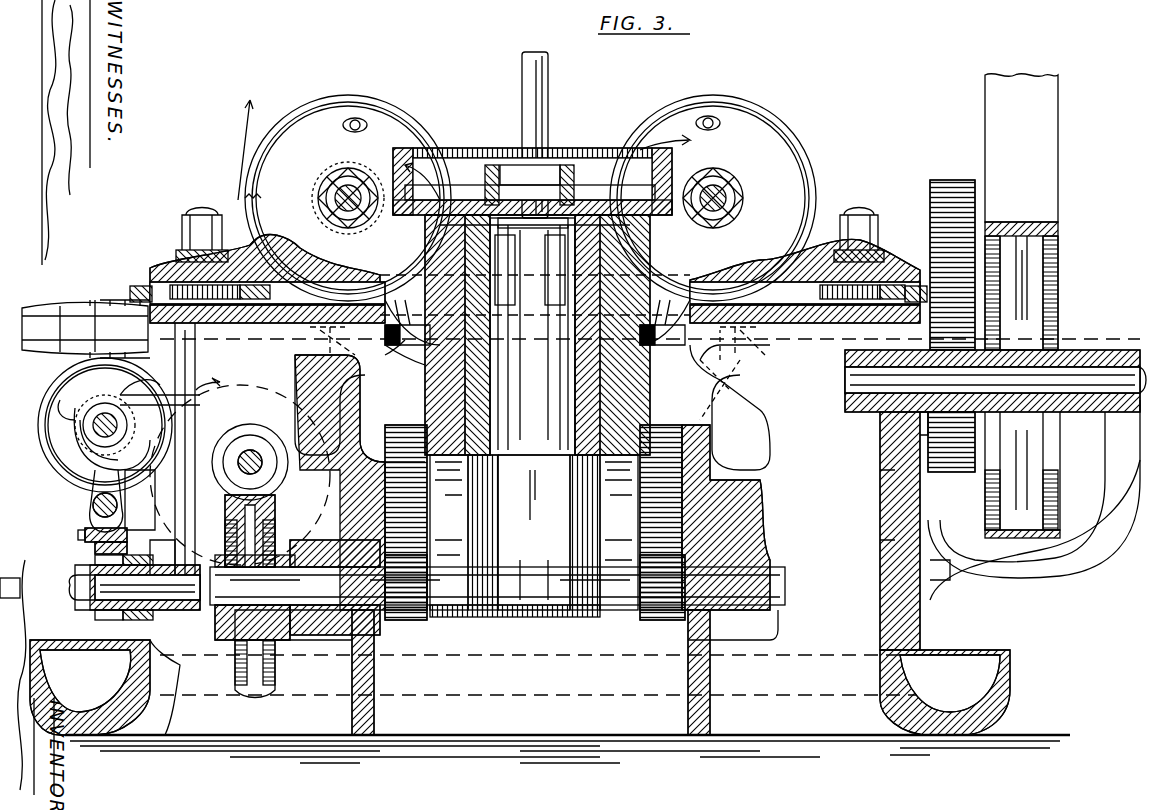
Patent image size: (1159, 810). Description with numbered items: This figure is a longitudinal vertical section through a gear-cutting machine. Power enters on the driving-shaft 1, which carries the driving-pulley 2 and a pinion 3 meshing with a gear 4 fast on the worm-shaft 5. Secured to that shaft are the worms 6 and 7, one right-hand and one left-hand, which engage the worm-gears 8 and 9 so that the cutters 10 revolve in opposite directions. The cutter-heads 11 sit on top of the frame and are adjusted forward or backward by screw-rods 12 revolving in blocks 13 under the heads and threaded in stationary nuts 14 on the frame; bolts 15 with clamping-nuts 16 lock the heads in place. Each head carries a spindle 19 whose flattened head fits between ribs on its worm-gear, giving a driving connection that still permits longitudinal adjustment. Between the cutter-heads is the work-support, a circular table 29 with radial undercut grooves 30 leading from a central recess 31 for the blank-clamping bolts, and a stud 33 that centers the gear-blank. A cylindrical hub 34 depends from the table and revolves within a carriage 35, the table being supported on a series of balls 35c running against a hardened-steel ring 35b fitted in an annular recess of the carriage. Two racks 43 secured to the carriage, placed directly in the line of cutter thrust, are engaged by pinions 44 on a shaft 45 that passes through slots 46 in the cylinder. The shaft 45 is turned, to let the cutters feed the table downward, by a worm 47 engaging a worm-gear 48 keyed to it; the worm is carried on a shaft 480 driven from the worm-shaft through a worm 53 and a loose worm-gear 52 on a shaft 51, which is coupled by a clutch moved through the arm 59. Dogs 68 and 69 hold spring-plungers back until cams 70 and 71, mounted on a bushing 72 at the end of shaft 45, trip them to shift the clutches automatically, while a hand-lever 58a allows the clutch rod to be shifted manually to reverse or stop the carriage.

The driving-shaft 1 is at (1108, 368).
The driving-pulley 2 is at (1050, 260).
The pinion 3 is at (978, 422).
The gear 4 is at (940, 185).
The worm-shaft 5 is at (405, 356).
The worm 6 is at (672, 300).
The worm 7 is at (407, 314).
The worm-gear 8 is at (713, 198).
The worm-gear 9 is at (348, 198).
The cutters 10 is at (356, 190).
The cutter-heads 11 is at (238, 262).
The screw-rods 12 is at (145, 285).
The blocks 13 is at (885, 285).
The stationary nuts 14 is at (218, 325).
The bolts 15 is at (200, 214).
The clamping-nuts 16 is at (182, 226).
The spindle 19 is at (335, 200).
The circular table 29 is at (572, 170).
The radial undercut grooves 30 is at (452, 180).
The central recess 31 is at (503, 165).
The stud 33 is at (546, 100).
The cylindrical hub 34 is at (498, 442).
The carriage 35 is at (622, 400).
The balls 35c is at (492, 240).
The hardened-steel ring 35b is at (555, 250).
The racks 43 is at (410, 505).
The pinions 44 is at (412, 615).
The shaft 45 is at (494, 610).
The slots 46 is at (534, 532).
The worm 47 is at (240, 440).
The worm-gear 48 is at (262, 545).
The shaft 480 is at (262, 465).
The shaft 51 is at (92, 506).
The worm-gear 52 is at (45, 405).
The worm 53 is at (108, 300).
The hand-lever 58a is at (60, 488).
The arm 59 is at (100, 462).
The latch or dog 68 is at (92, 553).
The latch or dog 69 is at (82, 530).
The cam 70 is at (105, 620).
The cam 71 is at (130, 620).
The bushing 72 is at (125, 615).